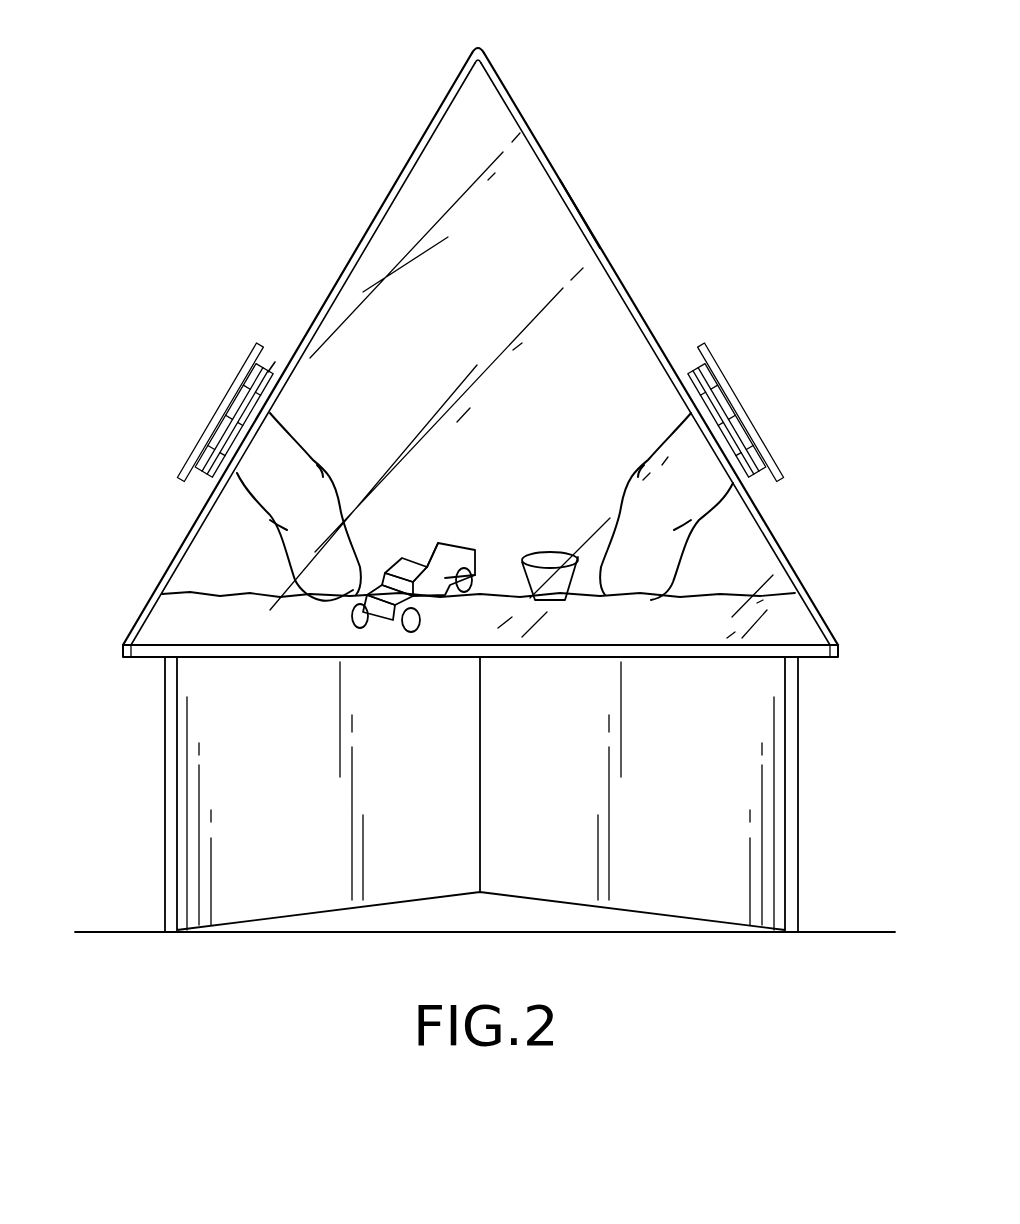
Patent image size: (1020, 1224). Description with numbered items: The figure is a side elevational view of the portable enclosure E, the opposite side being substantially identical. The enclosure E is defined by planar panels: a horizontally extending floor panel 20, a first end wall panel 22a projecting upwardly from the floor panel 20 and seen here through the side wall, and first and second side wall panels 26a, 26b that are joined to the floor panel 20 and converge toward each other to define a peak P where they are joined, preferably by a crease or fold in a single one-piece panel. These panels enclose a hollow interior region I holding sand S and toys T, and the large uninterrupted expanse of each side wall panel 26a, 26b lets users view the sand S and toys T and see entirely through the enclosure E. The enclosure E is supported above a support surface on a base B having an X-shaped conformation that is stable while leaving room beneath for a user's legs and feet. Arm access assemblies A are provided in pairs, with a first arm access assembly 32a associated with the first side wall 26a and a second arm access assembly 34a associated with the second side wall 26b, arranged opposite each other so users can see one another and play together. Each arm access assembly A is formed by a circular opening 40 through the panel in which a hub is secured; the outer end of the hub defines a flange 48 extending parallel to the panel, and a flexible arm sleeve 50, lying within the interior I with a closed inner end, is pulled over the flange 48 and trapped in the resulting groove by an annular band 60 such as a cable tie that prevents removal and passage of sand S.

The peak P is at (500, 42).
The portable enclosure E is at (567, 136).
The interior region I is at (580, 246).
The first side wall panel 26a is at (352, 225).
The second side wall panel 26b is at (660, 305).
The first end wall panel 22a is at (498, 308).
The arm access assembly A is at (494, 420).
The first arm access assembly 32a is at (218, 444).
The second arm access assembly 34a is at (780, 482).
The circular opening 40 is at (271, 378).
The flange 48 is at (182, 481).
The annular band 60 is at (200, 479).
The flexible arm sleeve 50 is at (336, 481).
The toys T is at (462, 538).
The sand S is at (489, 575).
The floor panel 20 is at (142, 666).
The base B is at (155, 794).